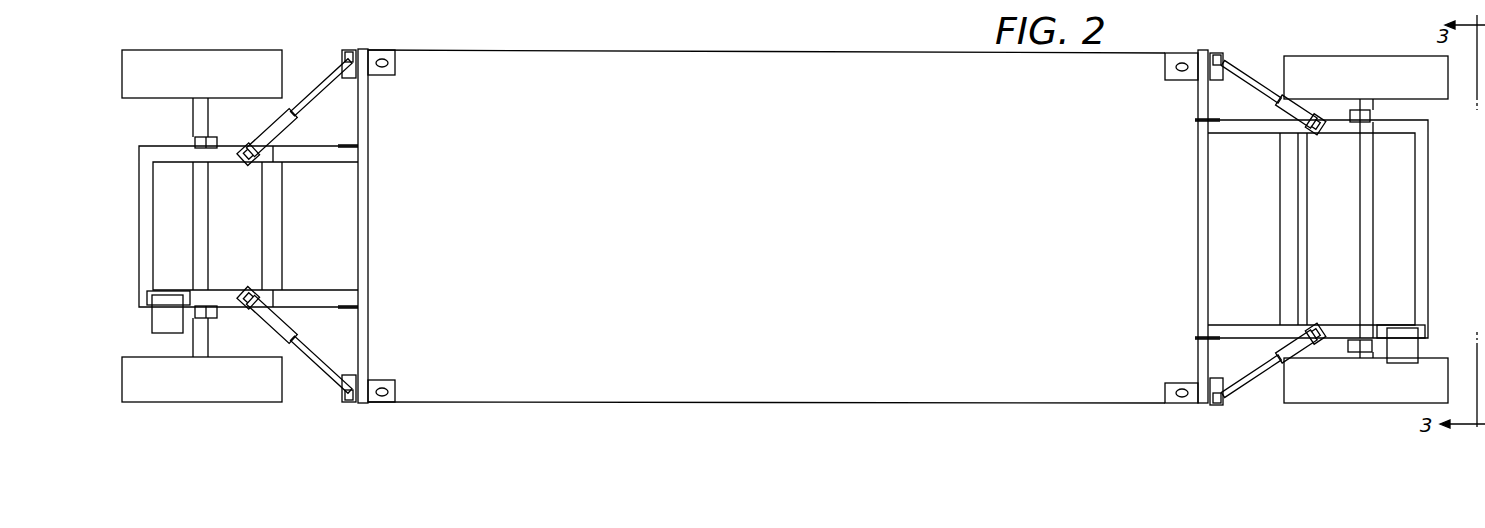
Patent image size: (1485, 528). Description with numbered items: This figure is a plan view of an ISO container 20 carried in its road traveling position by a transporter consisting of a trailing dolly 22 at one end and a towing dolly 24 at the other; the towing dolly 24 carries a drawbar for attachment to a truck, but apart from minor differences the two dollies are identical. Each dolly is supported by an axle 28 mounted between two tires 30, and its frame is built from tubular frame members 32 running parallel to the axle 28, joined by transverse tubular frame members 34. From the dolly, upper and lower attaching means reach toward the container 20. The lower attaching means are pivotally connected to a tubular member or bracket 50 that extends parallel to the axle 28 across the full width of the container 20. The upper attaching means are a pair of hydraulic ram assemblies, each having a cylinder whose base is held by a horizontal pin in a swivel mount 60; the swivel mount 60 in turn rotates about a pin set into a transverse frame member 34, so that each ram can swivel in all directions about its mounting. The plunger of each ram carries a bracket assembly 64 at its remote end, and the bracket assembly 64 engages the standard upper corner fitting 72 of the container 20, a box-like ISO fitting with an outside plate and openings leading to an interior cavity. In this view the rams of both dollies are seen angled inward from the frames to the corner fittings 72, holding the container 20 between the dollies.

The ISO container 20 is at (797, 240).
The trailing dolly 22 is at (1405, 38).
The towing dolly 24 is at (261, 42).
The axle 28 is at (1358, 170).
The tires 30 is at (1302, 56).
The tubular frame members 32 is at (1425, 191).
The transverse tubular frame members 34 is at (1347, 330).
The tubular member or bracket 50 is at (1213, 271).
The swivel mount 60 is at (1314, 141).
The bracket assembly 64 is at (350, 48).
The upper corner fitting 72 is at (395, 66).